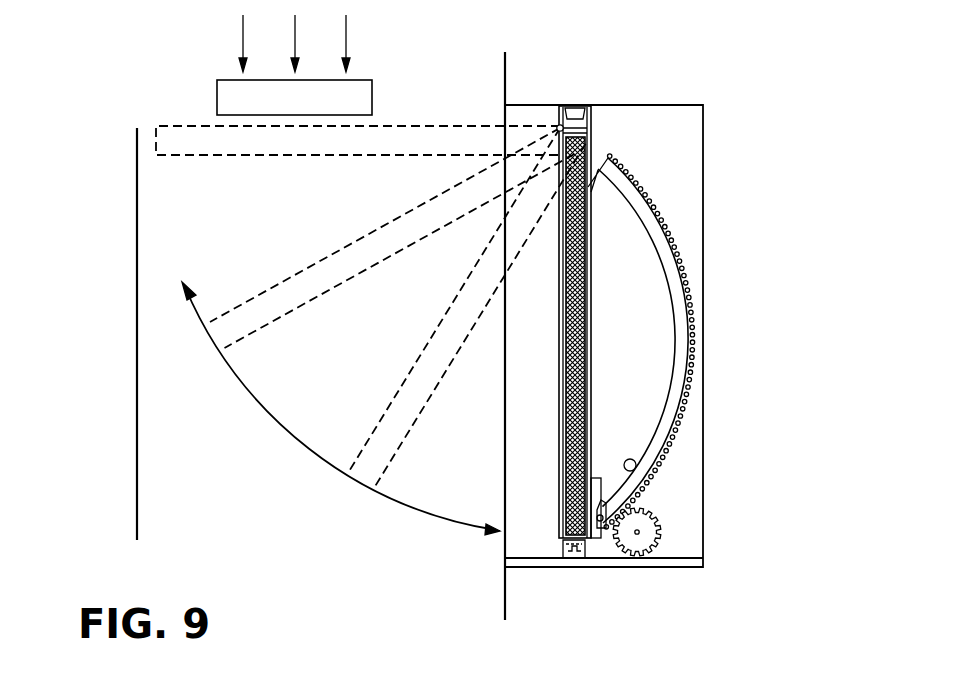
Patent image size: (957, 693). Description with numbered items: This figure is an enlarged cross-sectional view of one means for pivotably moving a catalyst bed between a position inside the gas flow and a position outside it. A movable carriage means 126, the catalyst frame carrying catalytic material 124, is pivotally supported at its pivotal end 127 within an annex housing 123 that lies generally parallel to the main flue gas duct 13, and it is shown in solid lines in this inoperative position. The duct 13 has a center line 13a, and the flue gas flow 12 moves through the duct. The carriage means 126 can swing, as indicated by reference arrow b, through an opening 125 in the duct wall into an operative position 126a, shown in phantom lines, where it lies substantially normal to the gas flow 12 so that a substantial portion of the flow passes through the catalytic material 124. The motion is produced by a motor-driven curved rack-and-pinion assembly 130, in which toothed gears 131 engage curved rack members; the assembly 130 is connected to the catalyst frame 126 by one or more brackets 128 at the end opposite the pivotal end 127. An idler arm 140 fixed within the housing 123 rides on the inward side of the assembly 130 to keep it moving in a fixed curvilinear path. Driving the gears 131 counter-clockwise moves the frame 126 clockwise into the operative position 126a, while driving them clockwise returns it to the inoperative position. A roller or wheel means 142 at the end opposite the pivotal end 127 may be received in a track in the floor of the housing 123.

The flue gas flow 12 is at (372, 85).
The main flue gas duct 13 is at (505, 590).
The center line of duct 13a is at (137, 333).
The annex housing 123 is at (703, 153).
The catalytic material 124 is at (583, 318).
The opening in flue gas duct 125 is at (519, 380).
The movable carriage means 126 is at (590, 148).
The operative position 126a is at (160, 126).
The pivotal end 127 is at (555, 120).
The bracket 128 is at (604, 540).
The motor-driven curved rack-and-pinion assembly 130 is at (672, 216).
The toothed gear 131 is at (672, 514).
The idler arm 140 is at (642, 460).
The roller or wheel means 142 is at (565, 552).
The reference arrow b is at (287, 432).